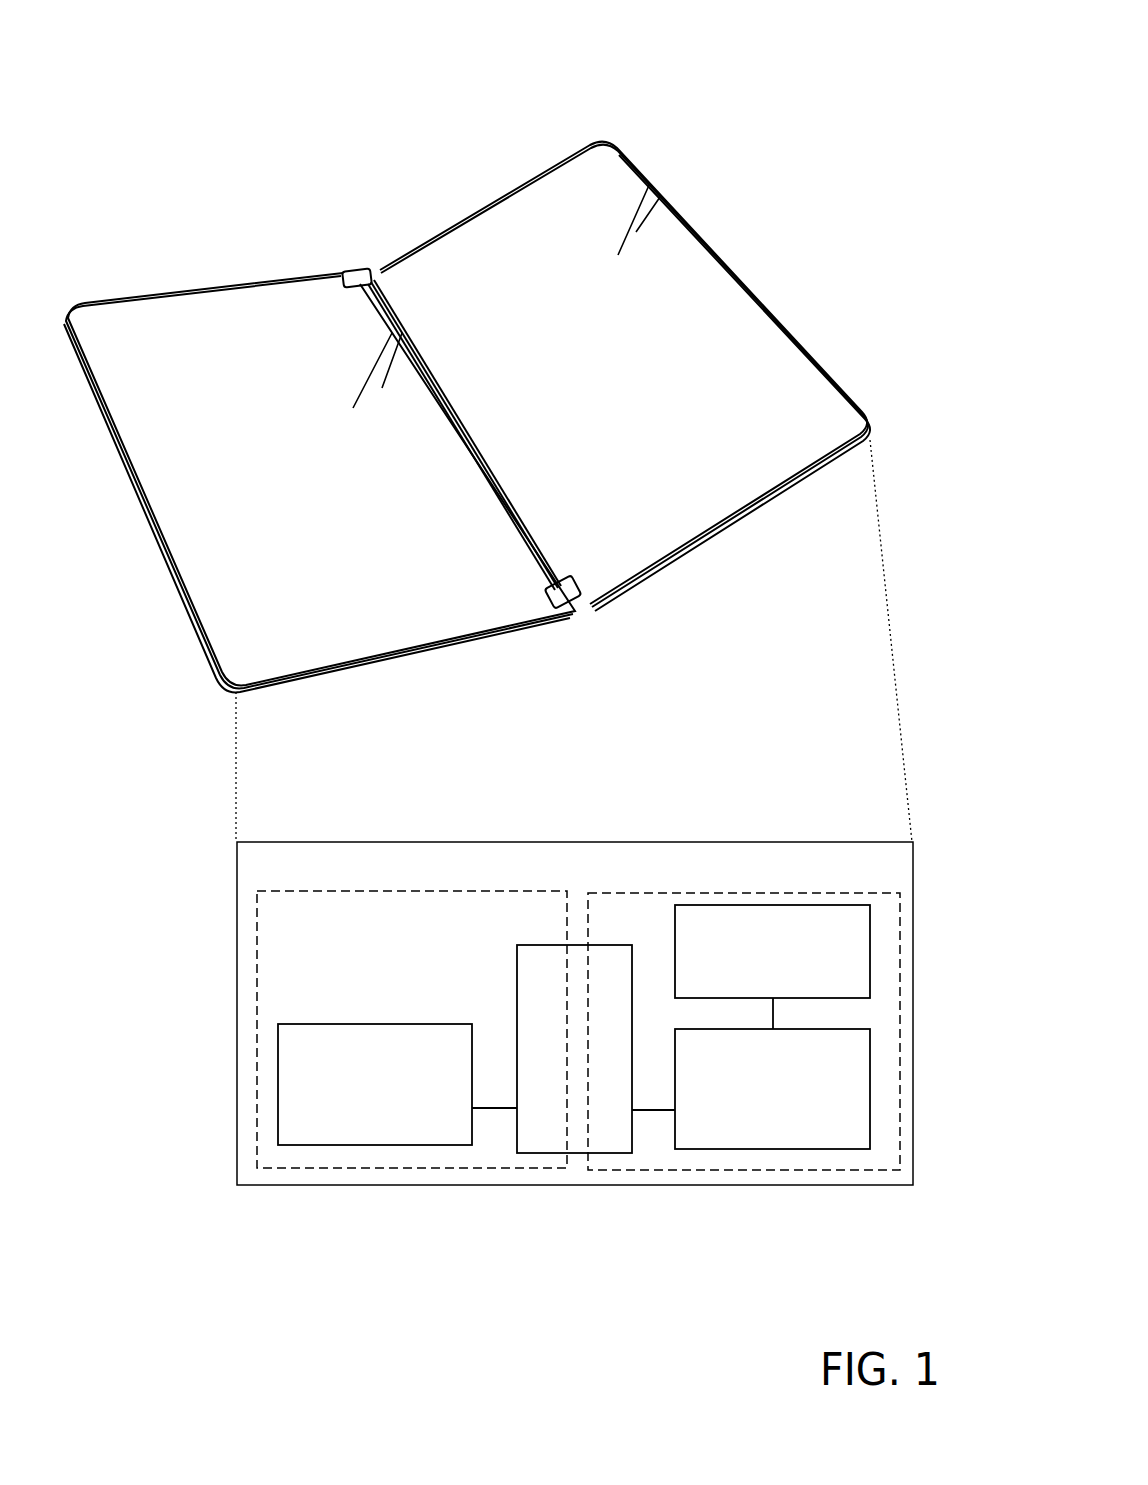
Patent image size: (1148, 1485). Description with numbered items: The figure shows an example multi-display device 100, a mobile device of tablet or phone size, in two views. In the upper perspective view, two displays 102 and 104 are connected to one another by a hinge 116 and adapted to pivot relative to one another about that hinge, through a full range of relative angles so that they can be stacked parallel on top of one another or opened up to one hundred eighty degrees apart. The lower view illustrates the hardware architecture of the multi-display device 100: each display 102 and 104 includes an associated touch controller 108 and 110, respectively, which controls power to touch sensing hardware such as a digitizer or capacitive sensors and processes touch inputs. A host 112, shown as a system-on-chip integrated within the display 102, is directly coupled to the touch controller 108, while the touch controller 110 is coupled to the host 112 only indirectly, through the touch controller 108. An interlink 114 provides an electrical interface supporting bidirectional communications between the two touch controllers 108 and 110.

The multi-display device 100 is at (766, 90).
The display 102 is at (648, 397).
The display 104 is at (326, 489).
The touch controller 108 is at (754, 1114).
The touch controller 110 is at (356, 1109).
The host 112 is at (754, 977).
The interlink 114 is at (556, 1074).
The hinge 116 is at (420, 347).